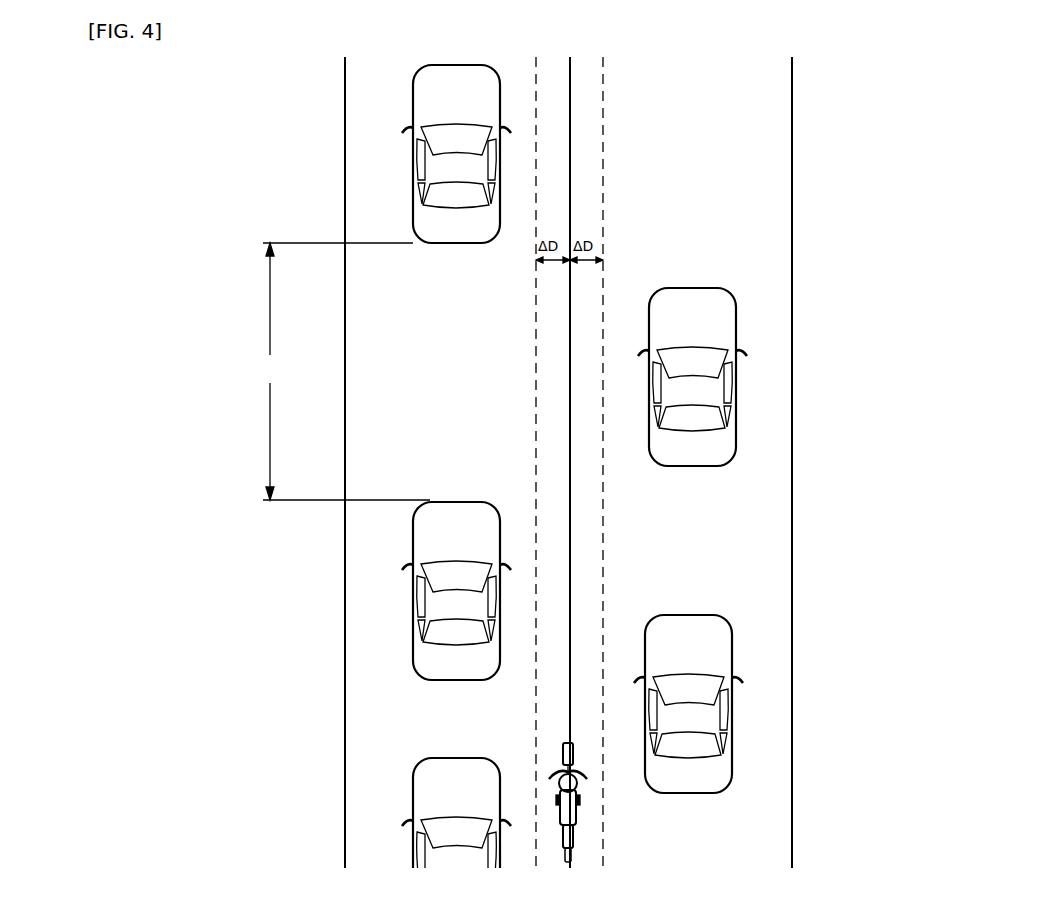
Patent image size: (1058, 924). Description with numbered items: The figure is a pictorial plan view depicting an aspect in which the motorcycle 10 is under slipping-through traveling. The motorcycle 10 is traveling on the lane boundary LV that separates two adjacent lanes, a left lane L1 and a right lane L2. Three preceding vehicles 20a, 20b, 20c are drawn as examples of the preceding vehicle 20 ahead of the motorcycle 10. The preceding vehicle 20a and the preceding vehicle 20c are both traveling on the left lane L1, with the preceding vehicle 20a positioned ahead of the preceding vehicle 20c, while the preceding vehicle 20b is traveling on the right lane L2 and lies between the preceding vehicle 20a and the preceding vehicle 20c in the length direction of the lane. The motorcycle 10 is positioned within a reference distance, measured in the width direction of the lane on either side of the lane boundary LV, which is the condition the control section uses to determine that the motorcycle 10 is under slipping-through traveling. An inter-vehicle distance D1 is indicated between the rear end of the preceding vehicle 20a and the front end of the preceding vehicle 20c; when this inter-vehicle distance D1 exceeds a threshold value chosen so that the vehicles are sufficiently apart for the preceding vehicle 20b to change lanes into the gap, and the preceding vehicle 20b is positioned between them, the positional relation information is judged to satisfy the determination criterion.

The motorcycle 10 is at (577, 825).
The preceding vehicle 20 is at (570, 372).
The preceding vehicle 20a is at (413, 168).
The preceding vehicle 20b is at (735, 385).
The preceding vehicle 20c is at (413, 617).
The left lane L1 is at (372, 552).
The right lane L2 is at (722, 546).
The lane boundary LV is at (570, 141).
The inter-vehicle distance D1 is at (344, 371).